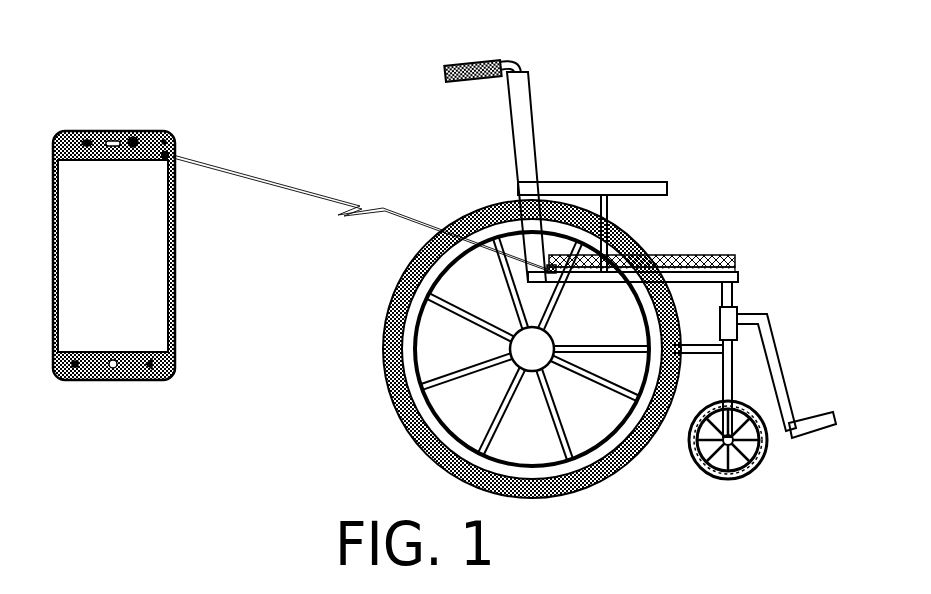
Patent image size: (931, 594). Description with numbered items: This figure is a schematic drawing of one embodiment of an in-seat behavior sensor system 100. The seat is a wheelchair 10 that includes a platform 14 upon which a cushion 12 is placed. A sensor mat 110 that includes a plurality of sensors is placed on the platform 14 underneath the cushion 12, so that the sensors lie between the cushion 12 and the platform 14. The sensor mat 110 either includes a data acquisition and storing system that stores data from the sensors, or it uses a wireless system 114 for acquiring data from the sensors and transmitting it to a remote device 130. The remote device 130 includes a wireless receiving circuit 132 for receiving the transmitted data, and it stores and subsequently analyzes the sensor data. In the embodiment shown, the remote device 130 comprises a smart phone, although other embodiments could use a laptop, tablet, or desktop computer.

The wheelchair system 100 is at (609, 279).
The wheelchair 10 is at (604, 182).
The cushion 12 is at (676, 255).
The platform 14 is at (712, 283).
The sensor mat 110 is at (733, 268).
The wireless system 114 is at (503, 204).
The remote device 130 is at (98, 130).
The wireless receiving circuit 132 is at (197, 140).